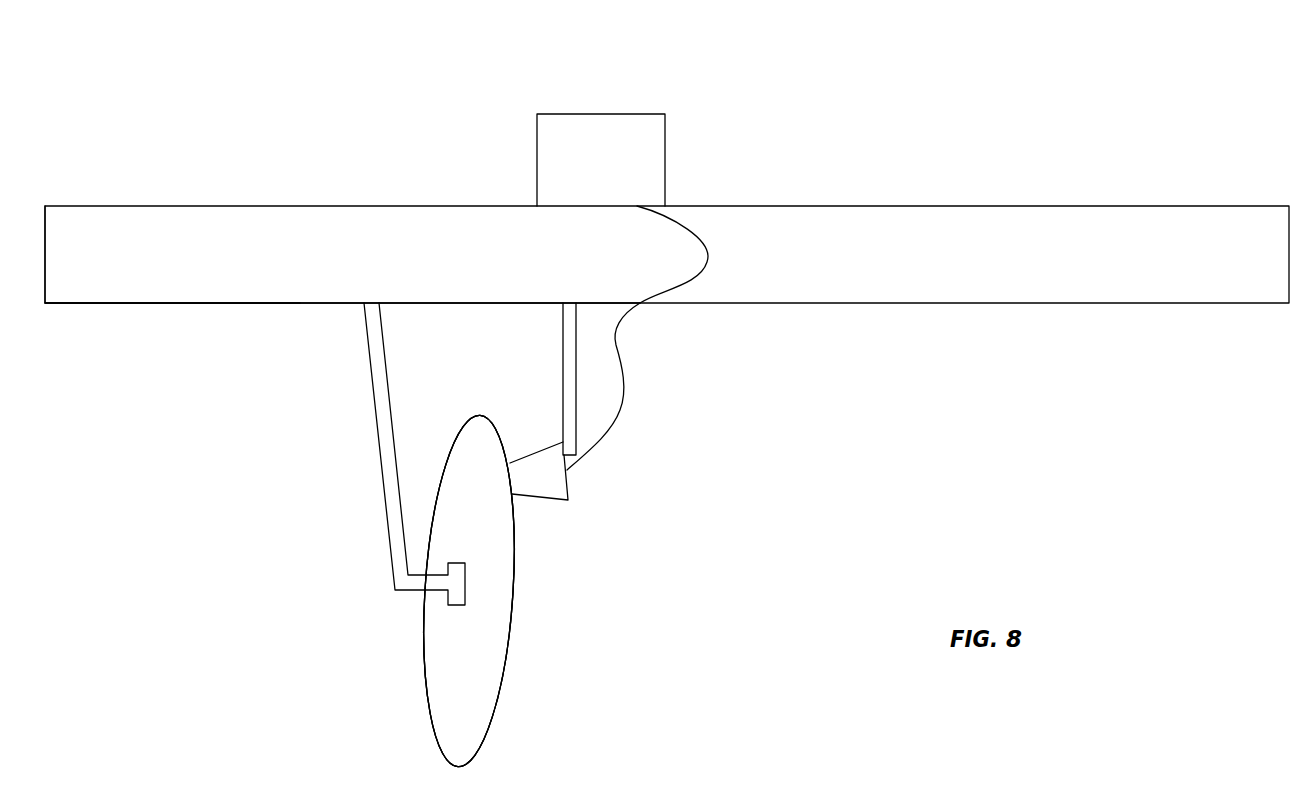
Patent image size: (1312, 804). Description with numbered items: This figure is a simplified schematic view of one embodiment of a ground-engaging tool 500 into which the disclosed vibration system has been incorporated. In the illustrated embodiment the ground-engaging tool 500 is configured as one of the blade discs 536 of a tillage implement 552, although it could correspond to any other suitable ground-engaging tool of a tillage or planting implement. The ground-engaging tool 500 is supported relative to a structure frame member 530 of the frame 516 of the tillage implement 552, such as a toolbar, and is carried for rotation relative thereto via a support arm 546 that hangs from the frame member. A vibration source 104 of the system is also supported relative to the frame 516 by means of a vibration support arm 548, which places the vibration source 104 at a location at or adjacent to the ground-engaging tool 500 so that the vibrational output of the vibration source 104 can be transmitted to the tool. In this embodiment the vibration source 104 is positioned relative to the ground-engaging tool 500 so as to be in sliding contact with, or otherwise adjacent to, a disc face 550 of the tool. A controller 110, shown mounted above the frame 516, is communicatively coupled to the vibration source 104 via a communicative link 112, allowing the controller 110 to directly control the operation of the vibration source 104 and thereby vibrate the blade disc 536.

The controller 110 is at (647, 120).
The tillage implement 552 is at (107, 178).
The frame 516 is at (997, 213).
The structure frame member 530 is at (130, 292).
The communicative link 112 is at (616, 345).
The vibration support arm 548 is at (562, 352).
The vibration source 104 is at (570, 488).
The support arm 546 is at (377, 430).
The ground-engaging tool 500 is at (498, 693).
The blade disc 536 is at (469, 591).
The disc face 550 is at (517, 605).